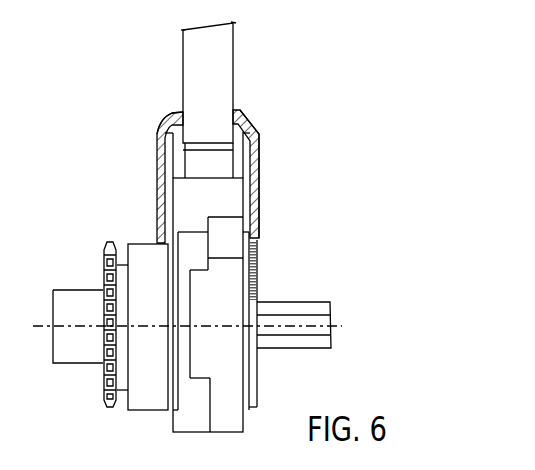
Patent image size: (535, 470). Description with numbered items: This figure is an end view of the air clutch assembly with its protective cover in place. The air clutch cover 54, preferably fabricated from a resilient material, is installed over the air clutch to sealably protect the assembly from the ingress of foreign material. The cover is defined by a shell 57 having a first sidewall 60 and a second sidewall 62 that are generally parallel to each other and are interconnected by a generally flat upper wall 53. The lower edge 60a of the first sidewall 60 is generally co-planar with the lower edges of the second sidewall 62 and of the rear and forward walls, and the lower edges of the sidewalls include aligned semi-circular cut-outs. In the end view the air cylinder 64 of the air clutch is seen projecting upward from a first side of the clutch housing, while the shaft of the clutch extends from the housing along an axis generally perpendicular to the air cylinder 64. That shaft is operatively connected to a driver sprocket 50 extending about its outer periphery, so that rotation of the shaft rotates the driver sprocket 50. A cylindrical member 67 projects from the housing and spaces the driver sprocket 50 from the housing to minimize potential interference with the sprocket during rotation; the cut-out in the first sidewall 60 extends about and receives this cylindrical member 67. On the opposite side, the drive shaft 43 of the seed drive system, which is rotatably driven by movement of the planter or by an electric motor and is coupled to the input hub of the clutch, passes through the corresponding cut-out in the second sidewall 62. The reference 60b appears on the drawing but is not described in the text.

The drive shaft 43 is at (293, 318).
The driver sprocket 50 is at (107, 396).
The upper wall 53 is at (176, 111).
The air clutch cover 54 is at (253, 123).
The shell 57 is at (176, 161).
The first sidewall 60 is at (193, 321).
The lower edge of first sidewall 60a is at (175, 414).
The housing second portion 60b is at (249, 414).
The second sidewall 62 is at (258, 148).
The air cylinder 64 is at (222, 56).
The cylindrical member 67 is at (123, 377).